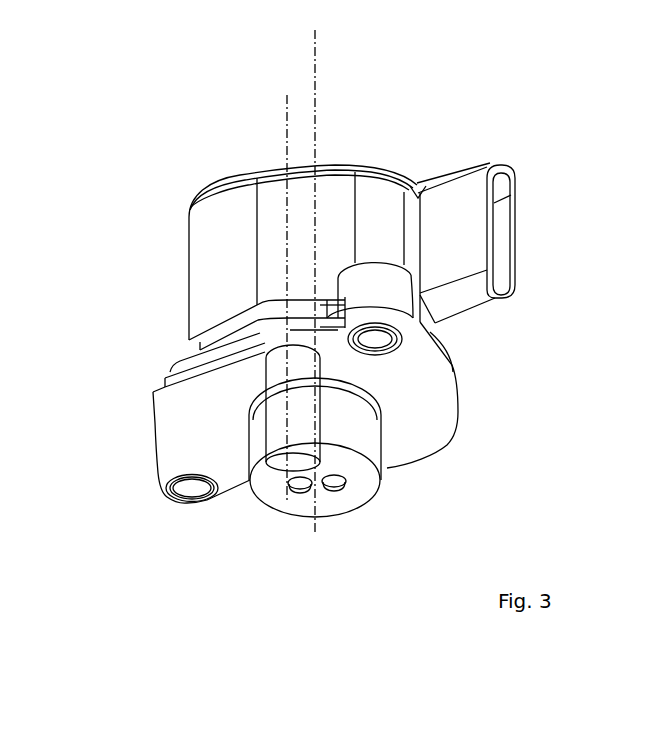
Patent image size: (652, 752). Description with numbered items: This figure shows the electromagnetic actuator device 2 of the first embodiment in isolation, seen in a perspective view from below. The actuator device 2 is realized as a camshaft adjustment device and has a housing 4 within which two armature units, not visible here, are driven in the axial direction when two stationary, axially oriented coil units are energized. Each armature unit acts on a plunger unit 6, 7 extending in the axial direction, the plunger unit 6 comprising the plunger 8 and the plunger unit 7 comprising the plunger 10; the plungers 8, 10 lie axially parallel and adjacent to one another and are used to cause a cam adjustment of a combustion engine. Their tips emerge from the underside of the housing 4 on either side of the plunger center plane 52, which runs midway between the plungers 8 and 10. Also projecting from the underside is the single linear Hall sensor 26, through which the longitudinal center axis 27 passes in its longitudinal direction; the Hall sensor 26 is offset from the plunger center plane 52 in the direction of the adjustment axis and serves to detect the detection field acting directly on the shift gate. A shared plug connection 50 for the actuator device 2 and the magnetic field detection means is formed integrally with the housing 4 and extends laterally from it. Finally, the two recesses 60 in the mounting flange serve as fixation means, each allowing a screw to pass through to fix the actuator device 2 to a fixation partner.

The actuator device 2 is at (325, 304).
The housing 4 is at (408, 156).
The plunger unit 6 is at (344, 487).
The plunger unit 7 is at (288, 535).
The plunger 8 is at (356, 534).
The plunger 10 is at (298, 494).
The Hall sensor 26 is at (266, 432).
The longitudinal center axis 27 is at (285, 140).
The plug connection 50 is at (516, 242).
The plunger center plane 52 is at (313, 68).
The recesses 60 is at (402, 339).